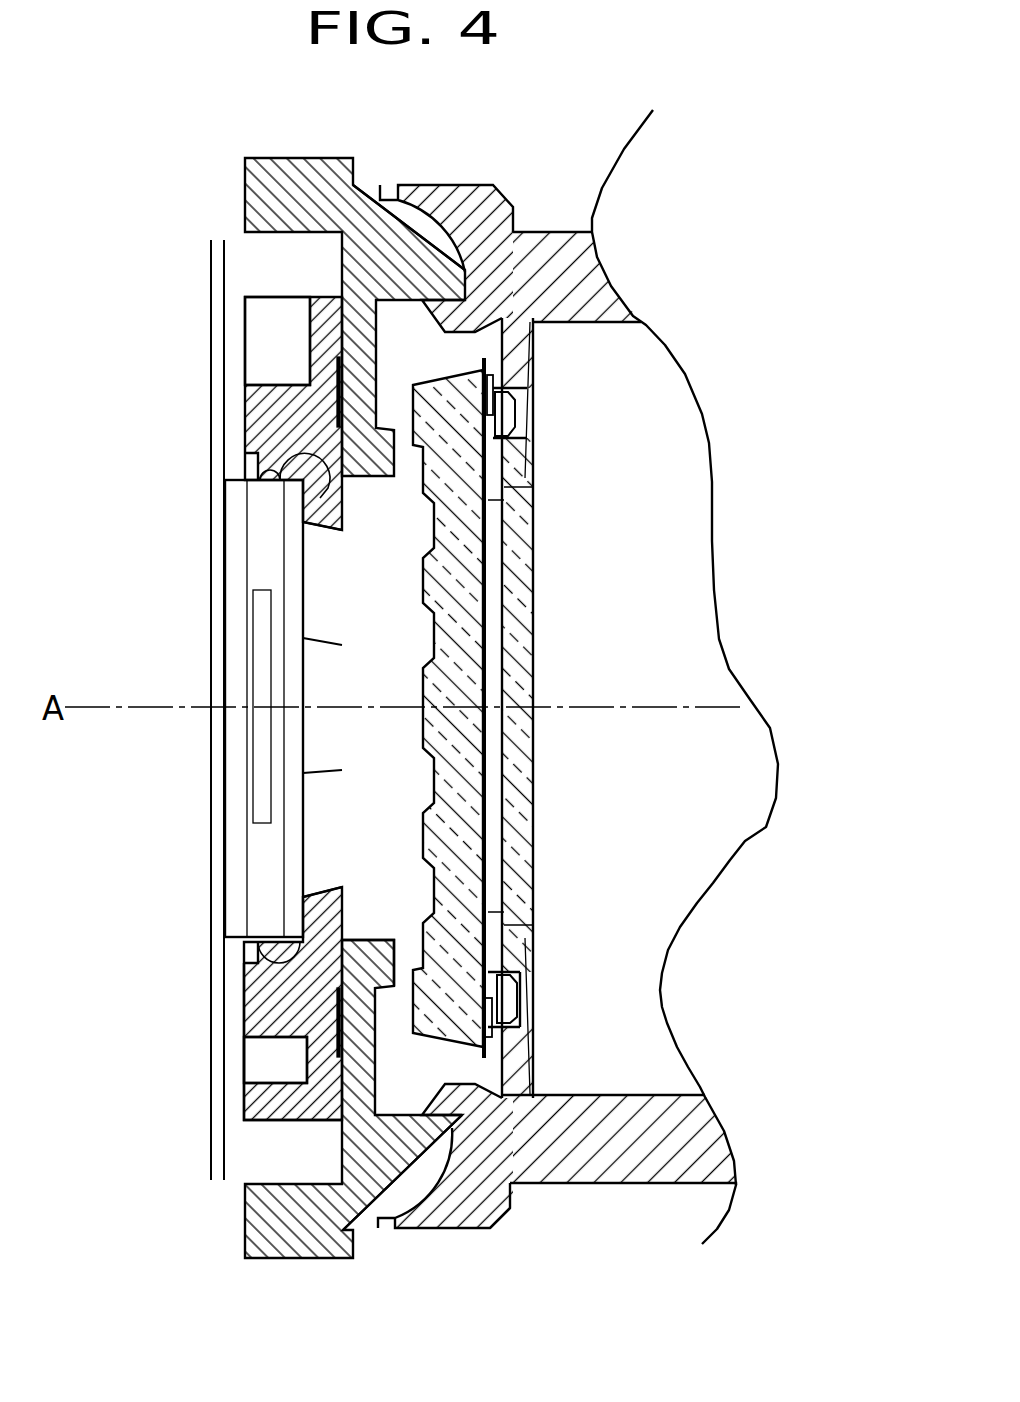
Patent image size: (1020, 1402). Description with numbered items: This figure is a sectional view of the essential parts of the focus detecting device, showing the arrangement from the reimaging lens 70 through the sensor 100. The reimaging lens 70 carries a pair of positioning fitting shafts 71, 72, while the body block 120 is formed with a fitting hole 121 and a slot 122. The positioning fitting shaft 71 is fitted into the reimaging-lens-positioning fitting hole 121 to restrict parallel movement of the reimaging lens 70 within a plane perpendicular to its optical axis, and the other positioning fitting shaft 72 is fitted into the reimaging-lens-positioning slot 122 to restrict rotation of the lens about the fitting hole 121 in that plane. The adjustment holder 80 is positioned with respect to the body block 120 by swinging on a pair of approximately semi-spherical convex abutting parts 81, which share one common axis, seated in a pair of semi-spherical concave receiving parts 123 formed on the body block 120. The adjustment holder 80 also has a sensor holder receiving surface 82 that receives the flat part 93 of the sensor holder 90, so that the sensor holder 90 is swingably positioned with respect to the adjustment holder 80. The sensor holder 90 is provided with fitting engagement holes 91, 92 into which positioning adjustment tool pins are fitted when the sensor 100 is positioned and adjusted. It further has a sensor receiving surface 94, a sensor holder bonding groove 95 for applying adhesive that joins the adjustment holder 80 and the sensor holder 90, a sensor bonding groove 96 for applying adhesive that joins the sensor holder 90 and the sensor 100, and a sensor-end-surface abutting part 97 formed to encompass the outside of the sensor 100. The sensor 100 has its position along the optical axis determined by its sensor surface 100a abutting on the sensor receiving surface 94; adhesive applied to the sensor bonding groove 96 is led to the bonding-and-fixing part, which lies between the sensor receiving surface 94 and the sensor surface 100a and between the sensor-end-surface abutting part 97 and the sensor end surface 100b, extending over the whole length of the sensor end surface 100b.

The reimaging lens 70 is at (478, 800).
The positioning fitting shaft 71 is at (503, 988).
The positioning fitting shaft 72 is at (507, 418).
The adjustment holder 80 is at (352, 1160).
The semi-spherical convex abutting parts 81 is at (360, 183).
The sensor holder receiving surface 82 is at (340, 1148).
The sensor holder 90 is at (248, 987).
The fitting engagement hole 91 is at (260, 1065).
The fitting engagement hole 92 is at (252, 370).
The flat part 93 is at (362, 296).
The sensor receiving surface 94 is at (300, 917).
The sensor holder bonding groove 95 is at (336, 385).
The sensor bonding groove 96 is at (282, 957).
The sensor-end-surface abutting part 97 is at (270, 937).
The sensor 100 is at (233, 662).
The sensor surface 100a is at (327, 472).
The sensor end surface 100b is at (277, 460).
The body block 120 is at (567, 257).
The fitting hole 121 is at (522, 1018).
The slot 122 is at (517, 398).
The semi-spherical concave receiving parts 123 is at (428, 185).